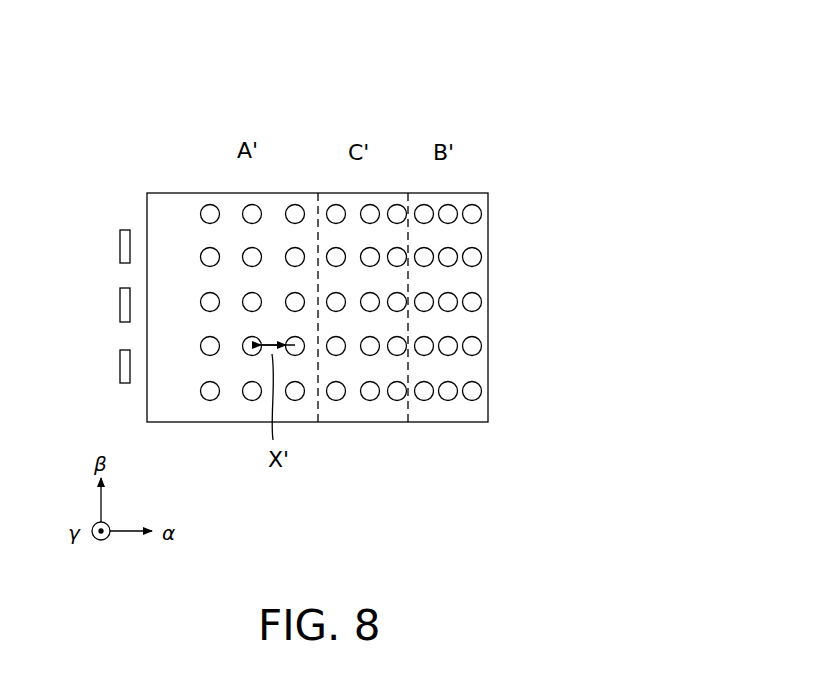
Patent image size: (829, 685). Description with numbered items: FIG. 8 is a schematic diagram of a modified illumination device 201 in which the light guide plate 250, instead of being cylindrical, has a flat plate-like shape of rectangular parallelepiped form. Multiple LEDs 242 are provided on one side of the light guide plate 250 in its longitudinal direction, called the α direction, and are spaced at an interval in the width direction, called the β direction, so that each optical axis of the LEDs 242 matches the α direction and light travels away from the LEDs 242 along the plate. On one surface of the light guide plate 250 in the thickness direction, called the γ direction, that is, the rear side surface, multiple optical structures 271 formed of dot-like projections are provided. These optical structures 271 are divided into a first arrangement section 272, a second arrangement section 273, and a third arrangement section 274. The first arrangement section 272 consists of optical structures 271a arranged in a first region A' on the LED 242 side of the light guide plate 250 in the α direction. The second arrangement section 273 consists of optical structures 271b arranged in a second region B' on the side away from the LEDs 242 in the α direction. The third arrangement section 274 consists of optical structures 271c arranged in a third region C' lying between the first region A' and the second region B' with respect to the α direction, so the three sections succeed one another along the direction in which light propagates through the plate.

The illumination device 201 is at (326, 98).
The light guide plate 250 is at (497, 283).
The LEDs 242 is at (119, 249).
The optical structures 271 is at (205, 258).
The optical structures 271a is at (210, 400).
The optical structures 271b is at (472, 401).
The optical structures 271c is at (365, 401).
The first arrangement section 272 is at (200, 191).
The second arrangement section 273 is at (462, 191).
The third arrangement section 274 is at (378, 191).